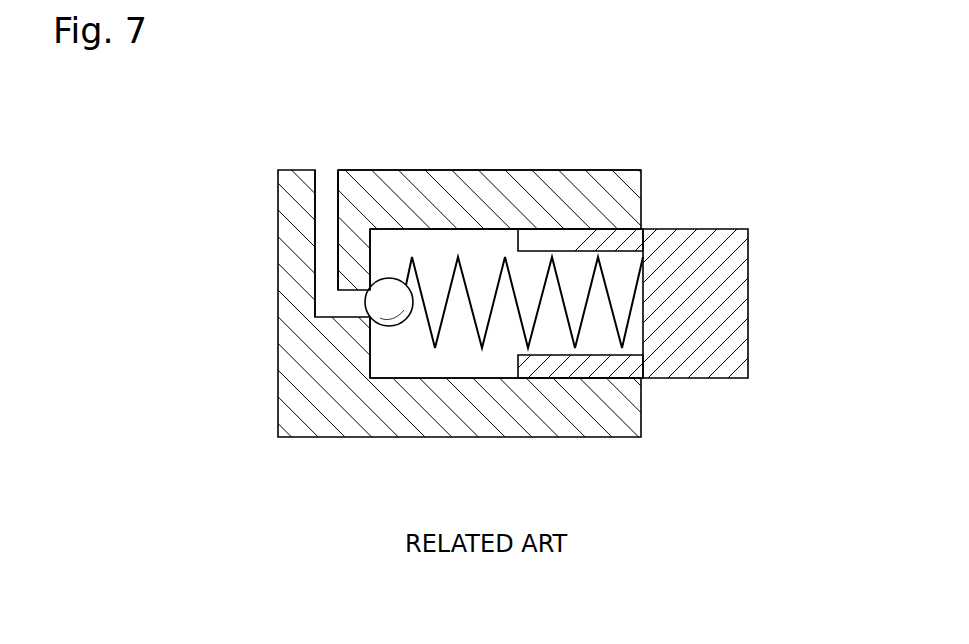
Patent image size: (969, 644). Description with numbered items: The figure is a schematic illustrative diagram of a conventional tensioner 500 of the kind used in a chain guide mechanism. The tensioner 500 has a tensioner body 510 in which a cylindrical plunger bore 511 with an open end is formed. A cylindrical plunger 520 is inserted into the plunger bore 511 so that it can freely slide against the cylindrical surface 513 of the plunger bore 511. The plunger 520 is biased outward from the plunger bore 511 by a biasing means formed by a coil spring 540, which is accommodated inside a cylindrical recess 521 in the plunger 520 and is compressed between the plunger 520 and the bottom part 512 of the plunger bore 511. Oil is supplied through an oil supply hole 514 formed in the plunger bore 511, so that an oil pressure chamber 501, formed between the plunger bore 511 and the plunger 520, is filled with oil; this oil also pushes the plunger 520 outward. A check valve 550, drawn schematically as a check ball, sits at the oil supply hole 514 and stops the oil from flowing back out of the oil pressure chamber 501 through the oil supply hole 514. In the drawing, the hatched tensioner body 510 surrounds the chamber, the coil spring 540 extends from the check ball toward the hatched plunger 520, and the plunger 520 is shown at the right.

The tensioner 500 is at (732, 100).
The oil pressure chamber 501 is at (458, 332).
The tensioner body 510 is at (400, 413).
The plunger bore 511 is at (508, 110).
The bottom part 512 is at (370, 250).
The cylindrical surface 513 is at (487, 238).
The oil supply hole 514 is at (326, 170).
The plunger 520 is at (732, 329).
The cylindrical recess 521 is at (583, 265).
The coil spring 540 is at (587, 317).
The check valve 550 is at (365, 301).